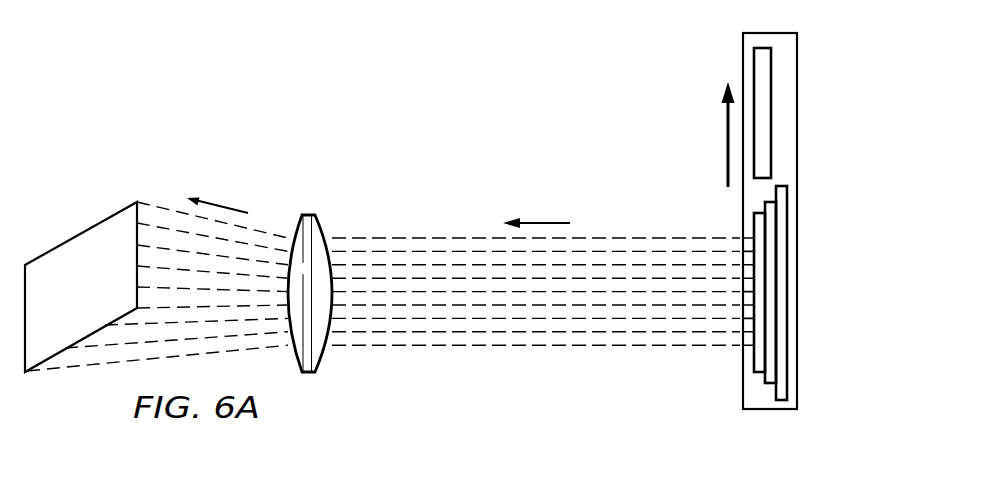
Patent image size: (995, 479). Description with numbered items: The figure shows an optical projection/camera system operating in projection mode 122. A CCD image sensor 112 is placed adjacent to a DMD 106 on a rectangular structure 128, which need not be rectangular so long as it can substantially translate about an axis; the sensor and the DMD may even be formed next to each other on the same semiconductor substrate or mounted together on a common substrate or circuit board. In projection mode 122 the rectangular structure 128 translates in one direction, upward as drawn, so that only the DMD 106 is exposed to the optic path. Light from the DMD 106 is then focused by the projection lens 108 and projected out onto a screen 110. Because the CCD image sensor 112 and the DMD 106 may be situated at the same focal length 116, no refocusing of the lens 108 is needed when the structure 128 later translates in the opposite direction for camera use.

The DMD 106 is at (788, 313).
The projection lens 108 is at (310, 213).
The screen 110 is at (83, 232).
The CCD image sensor 112 is at (754, 60).
The focal length 116 is at (738, 421).
The projection mode 122 is at (368, 166).
The rectangular structure 128 is at (798, 117).